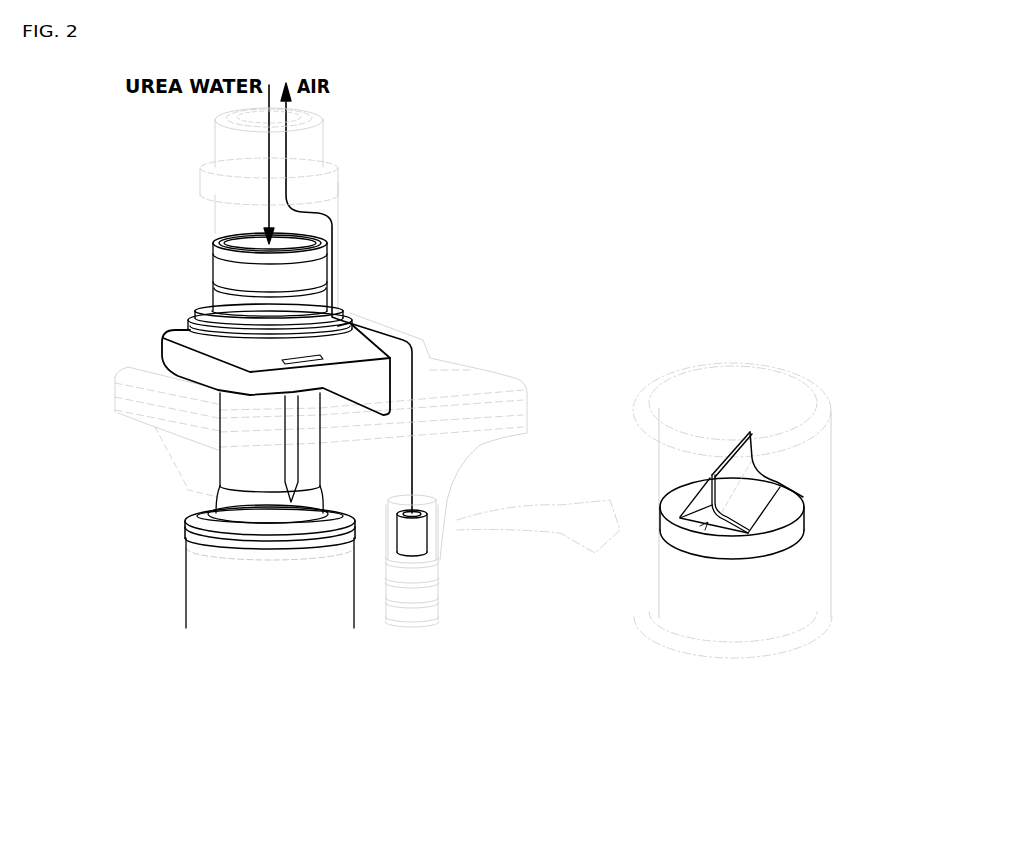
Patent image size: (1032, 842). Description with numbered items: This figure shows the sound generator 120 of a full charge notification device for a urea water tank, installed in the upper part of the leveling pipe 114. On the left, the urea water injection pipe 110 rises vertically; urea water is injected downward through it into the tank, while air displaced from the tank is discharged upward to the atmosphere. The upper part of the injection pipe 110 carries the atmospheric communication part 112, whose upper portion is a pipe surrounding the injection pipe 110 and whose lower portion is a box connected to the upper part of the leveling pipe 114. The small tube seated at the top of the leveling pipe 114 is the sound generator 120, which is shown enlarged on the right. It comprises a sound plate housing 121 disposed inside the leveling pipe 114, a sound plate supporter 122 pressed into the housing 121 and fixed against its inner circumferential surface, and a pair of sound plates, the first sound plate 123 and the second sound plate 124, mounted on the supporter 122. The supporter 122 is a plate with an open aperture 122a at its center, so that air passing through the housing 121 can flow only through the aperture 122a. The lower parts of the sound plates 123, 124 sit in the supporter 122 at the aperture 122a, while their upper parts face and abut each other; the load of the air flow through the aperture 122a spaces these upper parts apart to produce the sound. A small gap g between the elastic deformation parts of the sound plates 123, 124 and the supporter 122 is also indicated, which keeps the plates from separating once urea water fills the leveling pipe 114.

The urea water injection pipe 110 is at (218, 466).
The atmospheric communication part 112 is at (462, 355).
The leveling pipe 114 is at (440, 570).
The sound generator 120 is at (426, 514).
The sound plate housing 121 is at (831, 450).
The sound plate supporter 122 is at (778, 538).
The open aperture 122a is at (740, 538).
The first sound plate 123 is at (703, 500).
The second sound plate 124 is at (763, 490).
The gap g is at (708, 525).